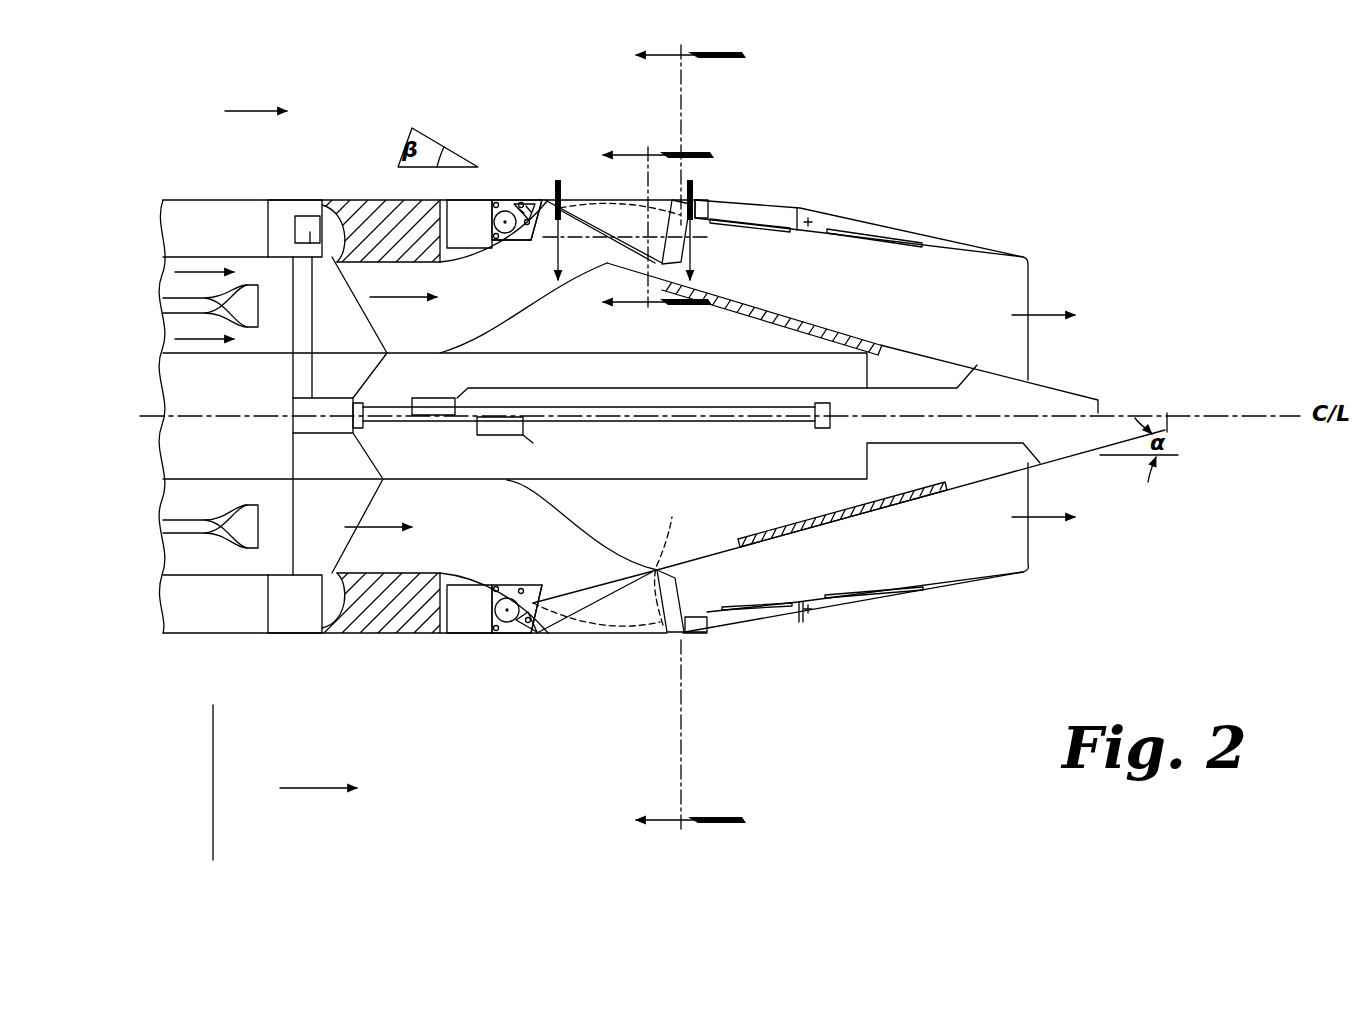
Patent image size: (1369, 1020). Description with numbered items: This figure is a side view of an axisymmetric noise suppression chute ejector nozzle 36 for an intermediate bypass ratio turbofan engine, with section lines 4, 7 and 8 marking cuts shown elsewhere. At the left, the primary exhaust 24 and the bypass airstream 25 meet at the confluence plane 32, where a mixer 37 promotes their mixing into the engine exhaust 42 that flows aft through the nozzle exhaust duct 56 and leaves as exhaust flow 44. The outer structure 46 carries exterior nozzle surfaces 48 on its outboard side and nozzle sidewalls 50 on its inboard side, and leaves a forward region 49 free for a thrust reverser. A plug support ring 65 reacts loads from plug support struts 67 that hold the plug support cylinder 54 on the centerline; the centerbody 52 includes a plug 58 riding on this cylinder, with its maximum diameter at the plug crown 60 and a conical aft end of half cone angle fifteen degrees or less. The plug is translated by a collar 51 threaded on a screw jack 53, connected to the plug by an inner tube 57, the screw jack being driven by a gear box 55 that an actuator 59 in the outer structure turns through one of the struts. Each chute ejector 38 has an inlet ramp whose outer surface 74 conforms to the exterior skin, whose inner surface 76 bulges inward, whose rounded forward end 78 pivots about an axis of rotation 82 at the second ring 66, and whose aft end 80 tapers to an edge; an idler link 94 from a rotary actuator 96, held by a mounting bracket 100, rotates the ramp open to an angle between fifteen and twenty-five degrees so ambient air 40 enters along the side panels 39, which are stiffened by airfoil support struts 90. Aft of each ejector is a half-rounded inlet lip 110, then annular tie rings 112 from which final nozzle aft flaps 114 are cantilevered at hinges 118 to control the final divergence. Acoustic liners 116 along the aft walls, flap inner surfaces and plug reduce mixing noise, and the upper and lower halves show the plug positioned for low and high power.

The section line 4- 4 is at (691, 437).
The section line 7- 7 is at (658, 229).
The section line 8- 8 is at (624, 230).
The primary exhaust 24 is at (196, 328).
The bypass airstream 25 is at (200, 272).
The confluence plane 32 is at (213, 820).
The chute ejector nozzle 36 is at (970, 110).
The mixer 37 is at (240, 533).
The chute ejector 38 is at (615, 133).
The side panel 39 is at (681, 240).
The ambient air 40 is at (247, 111).
The engine exhaust 42 is at (395, 297).
The exhaust flow 44 is at (1045, 315).
The outer structure 46 is at (243, 196).
The exterior nozzle surface 48 is at (748, 199).
The forward region 49 is at (357, 215).
The nozzle sidewall 50 is at (472, 254).
The collar 51 is at (430, 398).
The centerbody 52 is at (504, 486).
The screw jack 53 is at (417, 423).
The plug support cylinder 54 is at (503, 353).
The gear box 55 is at (340, 433).
The nozzle exhaust duct 56 is at (532, 592).
The inner tube 57 is at (885, 388).
The plug 58 is at (752, 347).
The actuator 59 is at (295, 232).
The plug crown 60 is at (565, 275).
The plug support ring 65 is at (293, 200).
The second ring 66 is at (462, 220).
The plug support strut 67 is at (362, 340).
The outer surface 74 is at (654, 619).
The inner surface 76 is at (607, 264).
The forward end 78 is at (553, 192).
The aft end 80 is at (675, 578).
The axis of rotation 82 is at (538, 244).
The support strut 90 is at (685, 515).
The idler link 94 is at (502, 200).
The rotary actuator 96 is at (497, 200).
The mounting bracket 100 is at (507, 598).
The inlet lip 110 is at (690, 192).
The annular tie ring 112 is at (706, 632).
The final nozzle aft flap 114 is at (945, 588).
The acoustic liner 116 is at (785, 231).
The hinge 118 is at (810, 220).